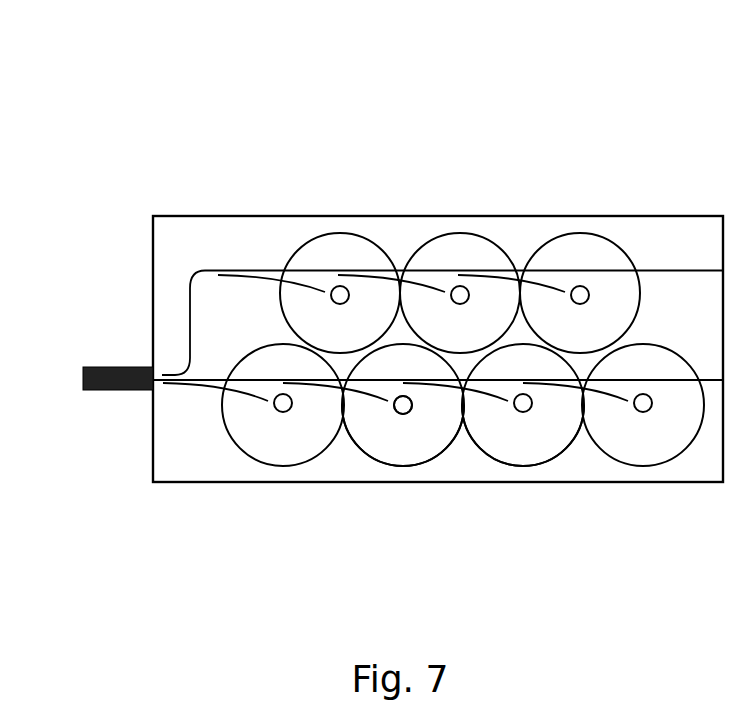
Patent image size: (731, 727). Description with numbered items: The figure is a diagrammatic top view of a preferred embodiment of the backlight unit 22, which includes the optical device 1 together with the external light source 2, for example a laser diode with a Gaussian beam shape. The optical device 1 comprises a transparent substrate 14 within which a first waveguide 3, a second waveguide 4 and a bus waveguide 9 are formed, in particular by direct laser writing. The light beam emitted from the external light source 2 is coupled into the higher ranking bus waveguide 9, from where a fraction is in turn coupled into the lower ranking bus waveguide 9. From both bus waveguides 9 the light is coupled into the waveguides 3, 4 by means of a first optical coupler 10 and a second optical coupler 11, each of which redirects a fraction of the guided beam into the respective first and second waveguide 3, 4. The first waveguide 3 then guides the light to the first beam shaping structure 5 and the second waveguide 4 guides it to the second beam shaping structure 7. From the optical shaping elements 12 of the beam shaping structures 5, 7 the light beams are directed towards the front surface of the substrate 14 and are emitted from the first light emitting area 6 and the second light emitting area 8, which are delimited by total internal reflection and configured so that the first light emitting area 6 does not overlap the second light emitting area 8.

The optical device 1 is at (418, 180).
The external light source 2 is at (108, 372).
The first waveguide 3 is at (498, 400).
The second waveguide 4 is at (337, 388).
The first beam shaping structure 5 is at (510, 465).
The first light emitting area 6 is at (412, 443).
The second beam shaping structure 7 is at (376, 460).
The second light emitting area 8 is at (558, 430).
The bus waveguide 9 is at (205, 270).
The first optical coupler 10 is at (403, 392).
The second optical coupler 11 is at (300, 388).
The optical shaping element 12 is at (409, 409).
The transparent substrate 14 is at (262, 238).
The backlight unit 22 is at (90, 110).